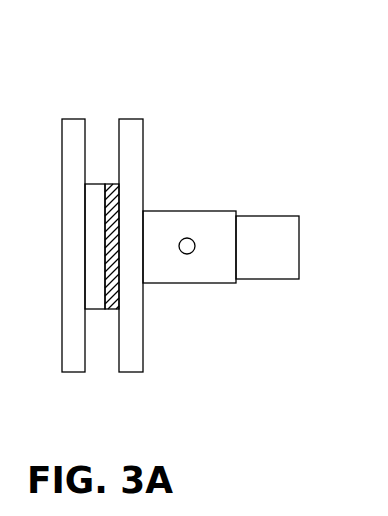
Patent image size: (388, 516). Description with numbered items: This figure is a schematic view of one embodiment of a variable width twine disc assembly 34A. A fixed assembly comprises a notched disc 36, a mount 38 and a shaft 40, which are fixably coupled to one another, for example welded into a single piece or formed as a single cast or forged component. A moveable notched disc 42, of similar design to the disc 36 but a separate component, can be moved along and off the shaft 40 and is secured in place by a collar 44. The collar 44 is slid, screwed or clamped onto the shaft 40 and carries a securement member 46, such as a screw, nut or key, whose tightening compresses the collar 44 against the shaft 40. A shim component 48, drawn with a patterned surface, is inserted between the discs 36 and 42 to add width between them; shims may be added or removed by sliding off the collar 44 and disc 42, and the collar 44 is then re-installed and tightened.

The variable width twine disc assembly 34A is at (300, 149).
The disc 36 is at (75, 119).
The mount 38 is at (99, 184).
The shaft 40 is at (299, 232).
The disc 42 is at (133, 119).
The collar 44 is at (157, 208).
The securement member 46 is at (188, 248).
The shim component 48 is at (112, 309).